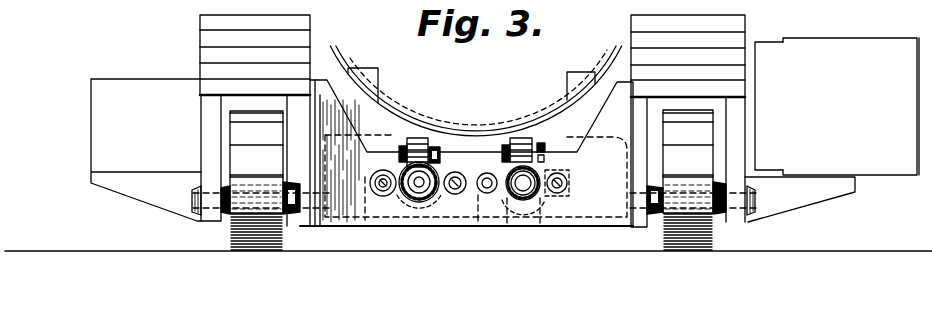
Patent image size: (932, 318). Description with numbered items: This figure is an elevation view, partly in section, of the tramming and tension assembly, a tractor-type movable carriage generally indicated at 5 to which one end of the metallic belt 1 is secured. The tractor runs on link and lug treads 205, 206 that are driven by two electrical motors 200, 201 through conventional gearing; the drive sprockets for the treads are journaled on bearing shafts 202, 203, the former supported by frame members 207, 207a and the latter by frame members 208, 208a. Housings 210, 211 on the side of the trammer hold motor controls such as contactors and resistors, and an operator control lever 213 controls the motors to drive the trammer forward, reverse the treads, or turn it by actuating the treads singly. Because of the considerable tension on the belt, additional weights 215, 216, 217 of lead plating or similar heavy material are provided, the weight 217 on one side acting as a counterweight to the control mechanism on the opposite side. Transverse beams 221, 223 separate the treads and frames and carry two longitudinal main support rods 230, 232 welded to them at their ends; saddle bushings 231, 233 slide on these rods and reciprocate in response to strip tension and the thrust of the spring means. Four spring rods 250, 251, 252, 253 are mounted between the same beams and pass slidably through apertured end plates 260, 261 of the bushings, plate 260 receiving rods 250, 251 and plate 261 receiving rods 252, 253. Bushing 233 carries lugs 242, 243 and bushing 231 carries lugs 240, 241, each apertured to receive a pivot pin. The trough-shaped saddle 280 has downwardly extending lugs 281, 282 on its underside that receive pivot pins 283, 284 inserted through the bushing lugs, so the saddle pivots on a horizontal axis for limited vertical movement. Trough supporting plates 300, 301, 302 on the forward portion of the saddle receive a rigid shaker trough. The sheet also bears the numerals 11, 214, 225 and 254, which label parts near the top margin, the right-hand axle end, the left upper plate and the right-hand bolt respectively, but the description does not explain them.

The belt 1 is at (389, 110).
The tramming apparatus 5 is at (322, 235).
The sheet fragment numeral 11 is at (43, 5).
The electrical motor 200 is at (370, 229).
The electrical motor 201 is at (572, 226).
The bearing shaft 202 is at (230, 193).
The bearing shaft 203 is at (661, 202).
The tread 205 is at (231, 238).
The tread 206 is at (720, 238).
The frame member 207 is at (205, 140).
The frame member 207a is at (309, 160).
The frame member 208 is at (636, 124).
The frame member 208a is at (742, 138).
The housing 210 is at (856, 113).
The housing 211 is at (776, 93).
The operator control lever 213 is at (193, 200).
The right axle hub 214 is at (756, 200).
The additional weight 215 is at (203, 38).
The additional weight 216 is at (738, 27).
The additional weight 217 is at (146, 121).
The transverse beam 221 is at (372, 163).
The transverse beam 223 is at (346, 227).
The upper plate 225 is at (350, 124).
The longitudinal main support rod 230 is at (523, 190).
The saddle bushing 231 is at (541, 226).
The longitudinal main support rod 232 is at (421, 199).
The saddle bushing 233 is at (443, 208).
The lug 240 is at (508, 138).
The lug 241 is at (543, 153).
The lug 242 is at (406, 146).
The lug 243 is at (440, 138).
The spring rod 250 is at (367, 193).
The spring rod 251 is at (457, 192).
The spring rod 252 is at (488, 194).
The spring rod 253 is at (568, 186).
The bolt seat 254 is at (568, 177).
The end plate 260 is at (399, 205).
The end plate 261 is at (568, 207).
The saddle 280 is at (561, 138).
The saddle lug 281 is at (425, 128).
The saddle lug 282 is at (521, 140).
The pivot pin 283 is at (442, 157).
The pivot pin 284 is at (545, 147).
The trough supporting plate 300 is at (380, 72).
The trough supporting plate 301 is at (492, 122).
The trough supporting plate 302 is at (570, 72).